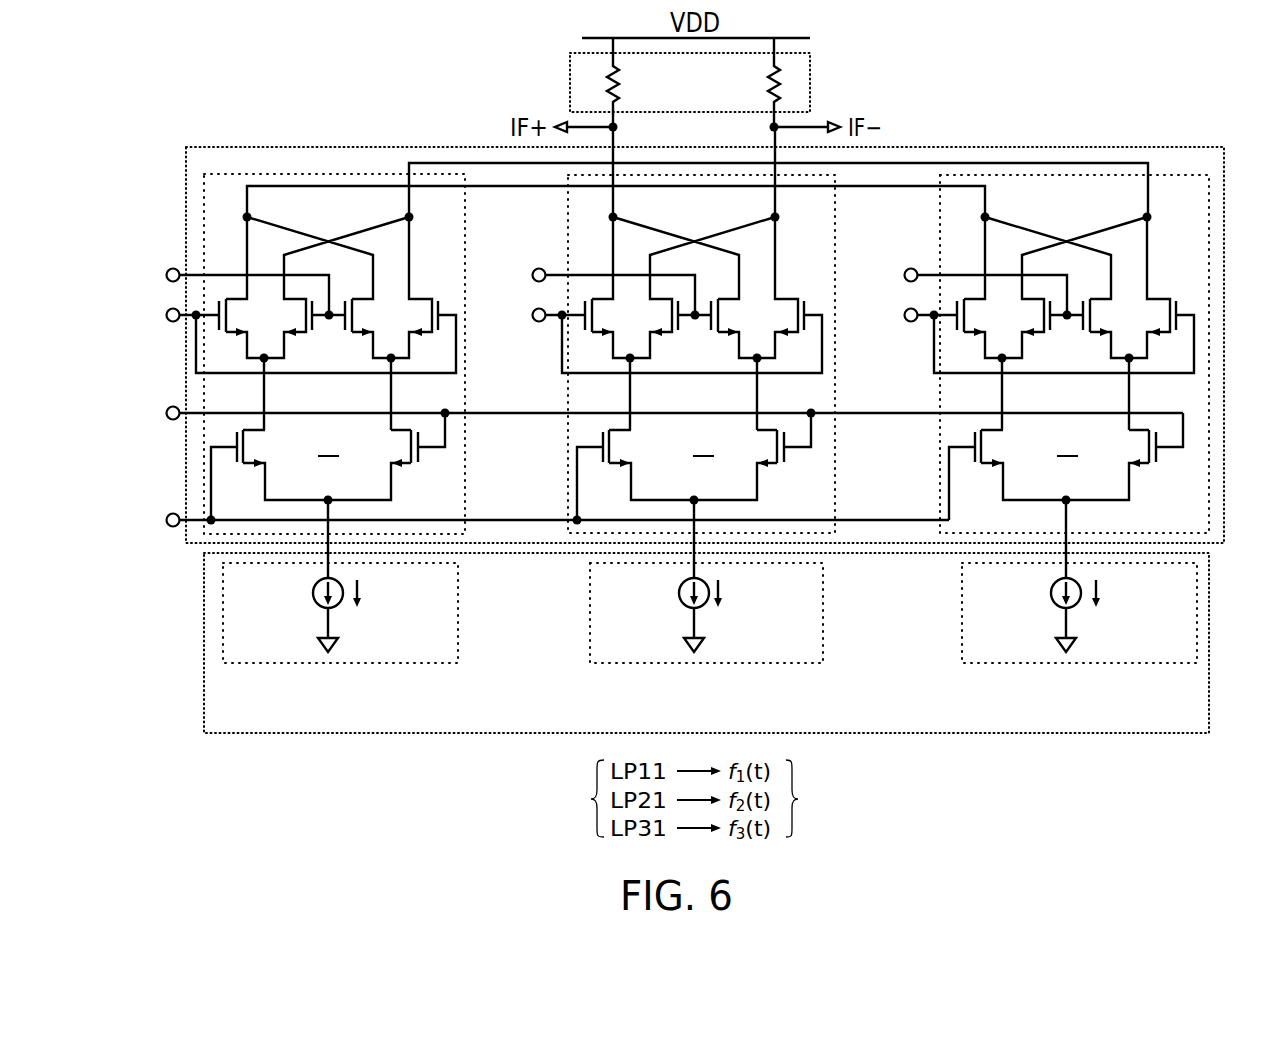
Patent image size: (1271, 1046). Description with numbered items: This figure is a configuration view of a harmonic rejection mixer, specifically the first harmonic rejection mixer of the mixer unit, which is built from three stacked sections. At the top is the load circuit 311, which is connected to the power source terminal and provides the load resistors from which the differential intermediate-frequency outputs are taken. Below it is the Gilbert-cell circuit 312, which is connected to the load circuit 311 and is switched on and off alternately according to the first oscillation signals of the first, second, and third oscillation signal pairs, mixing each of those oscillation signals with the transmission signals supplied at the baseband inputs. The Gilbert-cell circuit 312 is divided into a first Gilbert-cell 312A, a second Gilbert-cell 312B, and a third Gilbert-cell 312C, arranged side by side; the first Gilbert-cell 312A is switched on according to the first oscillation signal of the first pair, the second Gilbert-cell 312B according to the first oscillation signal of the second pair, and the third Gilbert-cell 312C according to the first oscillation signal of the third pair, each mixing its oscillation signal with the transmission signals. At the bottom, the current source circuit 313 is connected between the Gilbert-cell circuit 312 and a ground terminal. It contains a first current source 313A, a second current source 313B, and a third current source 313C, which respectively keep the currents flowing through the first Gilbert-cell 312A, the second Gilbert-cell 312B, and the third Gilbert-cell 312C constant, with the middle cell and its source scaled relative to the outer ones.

The load circuit 311 is at (811, 74).
The Gilbert-cell circuit 312 is at (1049, 147).
The first Gilbert-cell 312A is at (465, 229).
The second Gilbert-cell 312B is at (834, 256).
The third Gilbert-cell 312C is at (940, 215).
The current source circuit 313 is at (706, 676).
The first current source 313A is at (357, 665).
The second current source 313B is at (735, 665).
The third current source 313C is at (1135, 665).